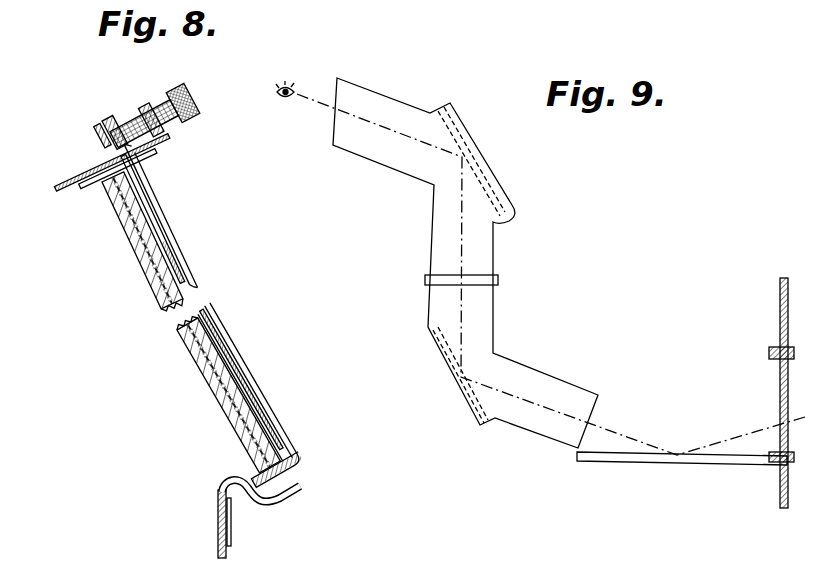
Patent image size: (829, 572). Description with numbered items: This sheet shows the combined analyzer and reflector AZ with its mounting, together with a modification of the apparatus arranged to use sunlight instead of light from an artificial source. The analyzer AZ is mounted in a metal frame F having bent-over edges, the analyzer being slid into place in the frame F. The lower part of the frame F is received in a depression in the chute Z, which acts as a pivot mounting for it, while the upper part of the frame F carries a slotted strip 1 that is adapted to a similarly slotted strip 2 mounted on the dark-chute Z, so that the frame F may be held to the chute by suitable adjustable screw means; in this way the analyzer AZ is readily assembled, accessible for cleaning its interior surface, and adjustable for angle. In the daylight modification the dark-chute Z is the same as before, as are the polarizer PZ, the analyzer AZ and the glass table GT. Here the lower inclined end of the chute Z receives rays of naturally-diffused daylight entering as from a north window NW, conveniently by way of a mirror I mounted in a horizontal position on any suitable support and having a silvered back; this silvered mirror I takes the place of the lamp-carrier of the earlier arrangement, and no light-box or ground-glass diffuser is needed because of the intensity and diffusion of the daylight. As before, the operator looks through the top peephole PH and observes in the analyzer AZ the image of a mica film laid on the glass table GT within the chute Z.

In FIG. 8, the slotted strip 1 is at (170, 138).
In FIG. 8, the slotted strip 2 is at (110, 160).
In FIG. 8, the dark-chute Z is at (58, 184).
In FIG. 9, the dark-chute Z is at (373, 148).
In FIG. 8, the combined analyzer and reflector AZ is at (165, 313).
In FIG. 9, the combined analyzer and reflector AZ is at (495, 168).
In FIG. 8, the metal frame F is at (237, 377).
In FIG. 9, the top peephole PH is at (337, 118).
In FIG. 9, the polarizer PZ is at (458, 383).
In FIG. 9, the glass table GT is at (499, 280).
In FIG. 9, the silvered mirror I is at (713, 461).
In FIG. 9, the north window NW is at (779, 392).